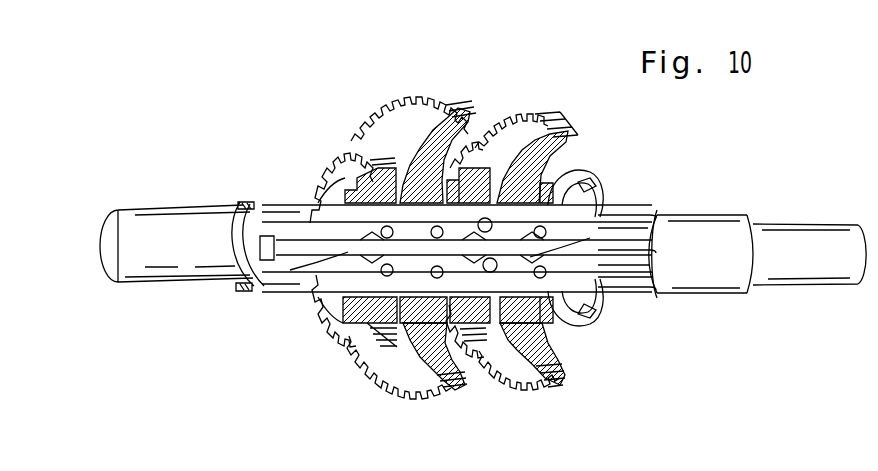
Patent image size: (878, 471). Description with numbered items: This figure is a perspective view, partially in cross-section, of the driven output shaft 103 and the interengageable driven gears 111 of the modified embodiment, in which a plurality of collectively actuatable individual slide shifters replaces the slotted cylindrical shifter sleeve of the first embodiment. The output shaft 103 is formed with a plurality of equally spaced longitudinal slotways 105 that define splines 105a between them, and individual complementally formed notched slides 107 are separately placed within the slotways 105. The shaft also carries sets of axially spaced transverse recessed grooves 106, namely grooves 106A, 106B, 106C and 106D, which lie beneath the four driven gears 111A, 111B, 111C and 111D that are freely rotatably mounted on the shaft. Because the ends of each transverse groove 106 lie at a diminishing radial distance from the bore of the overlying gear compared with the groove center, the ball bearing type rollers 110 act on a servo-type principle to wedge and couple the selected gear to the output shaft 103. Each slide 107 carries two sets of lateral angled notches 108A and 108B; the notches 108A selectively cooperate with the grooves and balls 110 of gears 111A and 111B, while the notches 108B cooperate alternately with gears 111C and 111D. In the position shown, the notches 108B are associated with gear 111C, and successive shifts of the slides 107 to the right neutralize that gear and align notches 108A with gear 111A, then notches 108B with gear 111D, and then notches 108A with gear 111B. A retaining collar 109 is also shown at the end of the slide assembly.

The output shaft 103 is at (176, 262).
The longitudinal slotways 105 is at (263, 259).
The splines 105a is at (250, 279).
The transverse grooves 106 is at (546, 436).
The transverse recessed groove 106A is at (377, 280).
The transverse recessed groove 106B is at (428, 280).
The transverse recessed groove 106C is at (480, 280).
The transverse recessed groove 106D is at (533, 280).
The notched slides 107 is at (302, 247).
The notches 108A is at (348, 250).
The notches 108B is at (503, 268).
The retaining collar 109 is at (595, 207).
The ball bearing type rollers 110 is at (436, 262).
The driven gears 111 is at (546, 52).
The driven gear 111A is at (345, 150).
The driven gear 111B is at (410, 100).
The driven gear 111C is at (476, 134).
The driven gear 111D is at (521, 112).